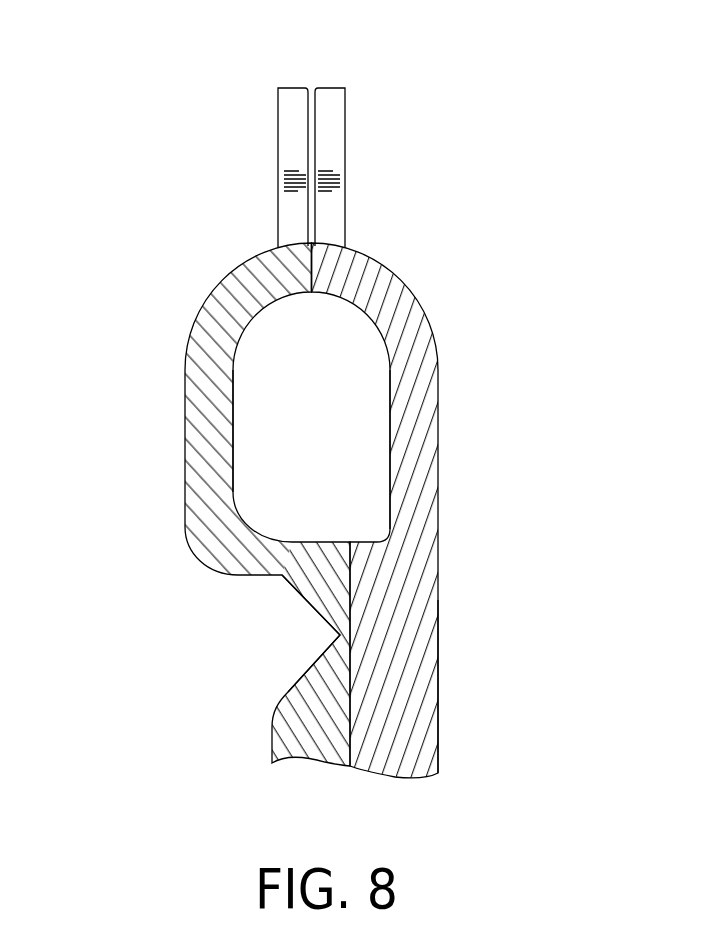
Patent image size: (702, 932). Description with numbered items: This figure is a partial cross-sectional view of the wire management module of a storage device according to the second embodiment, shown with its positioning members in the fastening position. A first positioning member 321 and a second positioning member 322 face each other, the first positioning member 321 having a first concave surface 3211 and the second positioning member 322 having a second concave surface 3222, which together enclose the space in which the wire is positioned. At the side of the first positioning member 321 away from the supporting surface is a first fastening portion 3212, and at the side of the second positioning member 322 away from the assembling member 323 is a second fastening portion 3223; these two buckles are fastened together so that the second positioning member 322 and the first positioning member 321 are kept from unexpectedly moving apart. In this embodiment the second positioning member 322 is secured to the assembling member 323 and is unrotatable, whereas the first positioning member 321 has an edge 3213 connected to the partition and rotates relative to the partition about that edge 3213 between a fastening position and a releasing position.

The first positioning member 321 is at (206, 454).
The second positioning member 322 is at (424, 455).
The first concave surface 3211 is at (250, 387).
The second concave surface 3222 is at (373, 387).
The second fastening portion 3223 is at (290, 87).
The first fastening portion 3212 is at (332, 87).
The edge 3213 is at (340, 637).
The assembling member 323 is at (407, 740).